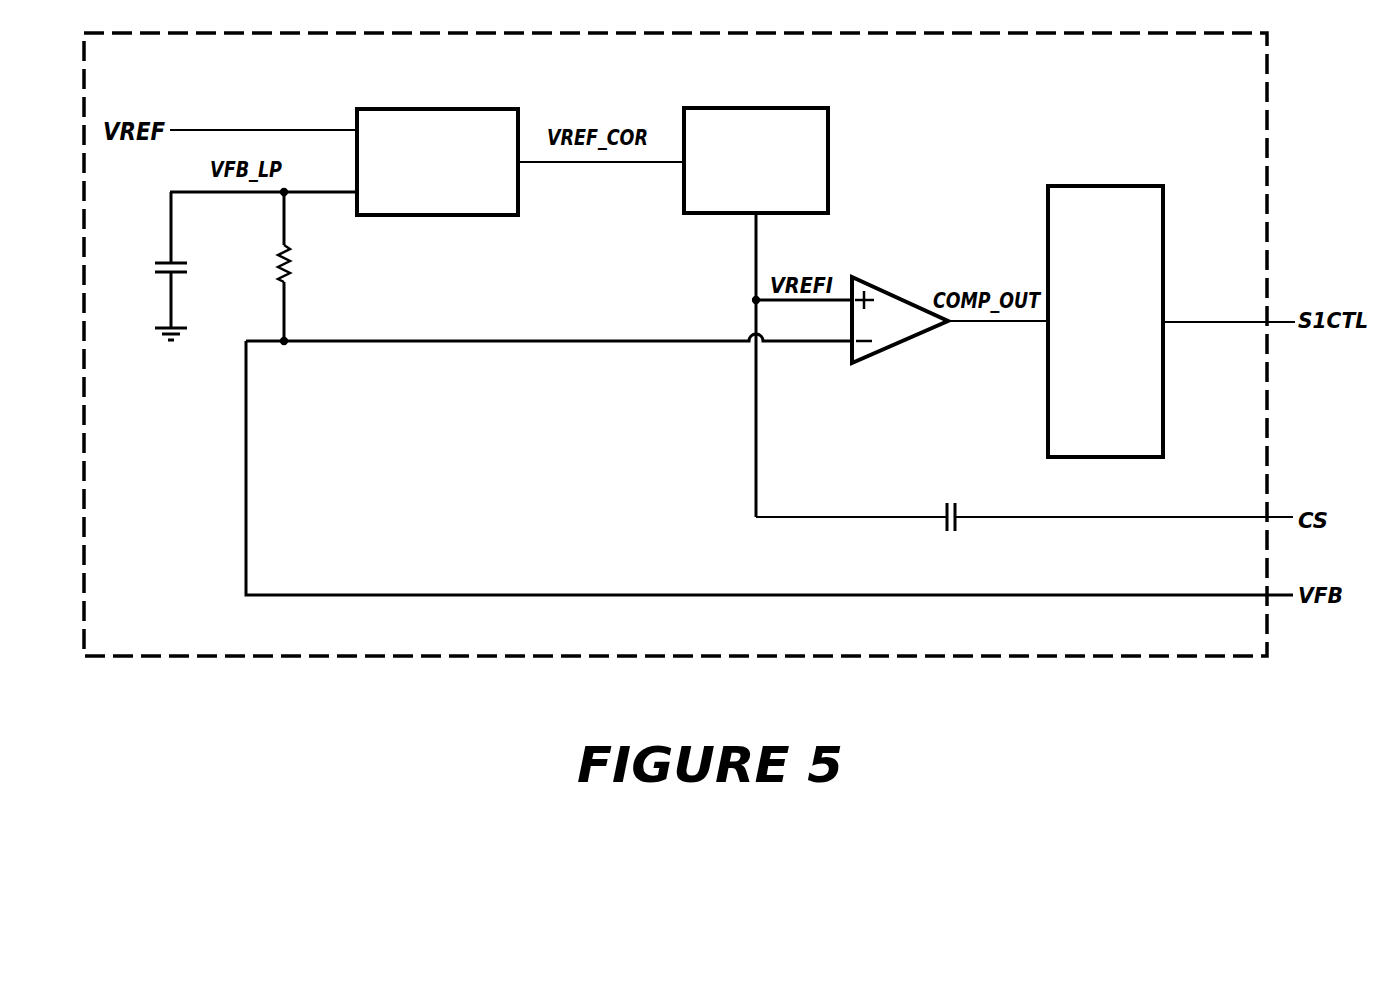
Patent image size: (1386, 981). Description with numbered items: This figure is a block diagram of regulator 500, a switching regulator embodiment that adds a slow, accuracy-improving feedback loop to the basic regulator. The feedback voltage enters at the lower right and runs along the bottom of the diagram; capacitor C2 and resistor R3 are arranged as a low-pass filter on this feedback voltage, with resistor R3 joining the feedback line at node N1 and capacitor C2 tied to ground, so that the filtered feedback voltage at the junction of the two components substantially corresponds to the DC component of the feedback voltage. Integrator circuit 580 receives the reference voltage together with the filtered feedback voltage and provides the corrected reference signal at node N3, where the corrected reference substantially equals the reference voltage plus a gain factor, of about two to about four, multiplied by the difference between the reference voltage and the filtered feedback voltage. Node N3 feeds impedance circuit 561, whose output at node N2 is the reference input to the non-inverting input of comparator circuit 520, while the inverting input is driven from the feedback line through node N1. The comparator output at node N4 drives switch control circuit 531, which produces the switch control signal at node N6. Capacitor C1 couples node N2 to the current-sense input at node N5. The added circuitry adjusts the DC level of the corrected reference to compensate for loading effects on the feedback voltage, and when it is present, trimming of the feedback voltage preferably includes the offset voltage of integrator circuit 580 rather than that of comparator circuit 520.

The regulator 500 is at (1235, 80).
The integrator circuit 580 is at (503, 203).
The impedance circuit 561 is at (807, 201).
The comparator circuit 520 is at (912, 331).
The switch control circuit 531 is at (1139, 446).
The node N1 is at (284, 345).
The node N2 is at (756, 301).
The node N3 is at (604, 165).
The node N4 is at (987, 324).
The node N5 is at (1020, 520).
The node N6 is at (1197, 325).
The capacitor circuit C1 is at (860, 504).
The capacitor C2 is at (187, 266).
The resistor R3 is at (301, 266).